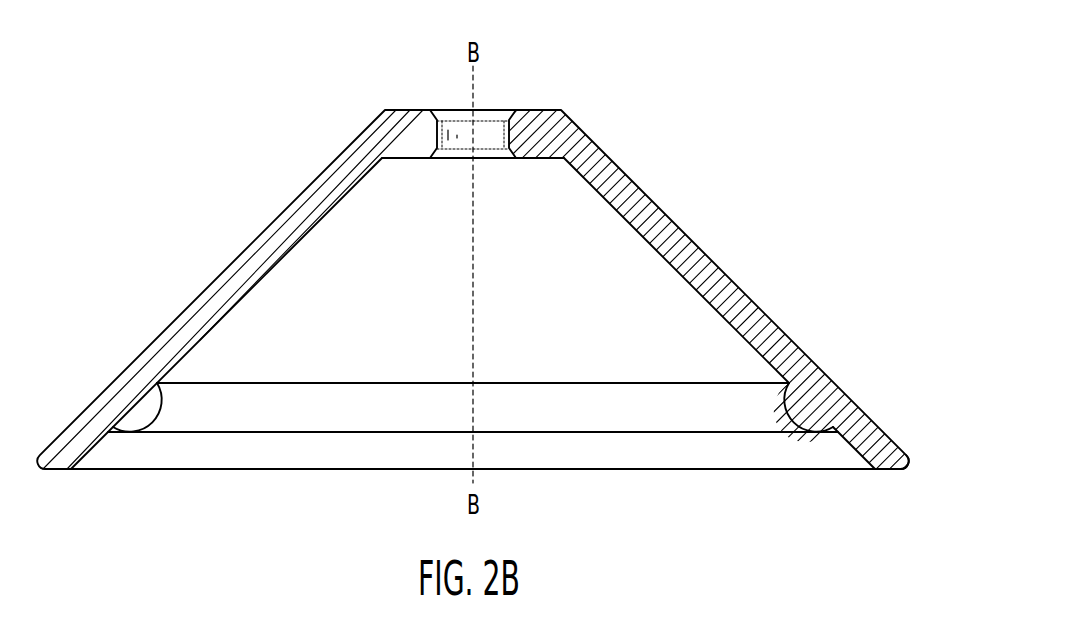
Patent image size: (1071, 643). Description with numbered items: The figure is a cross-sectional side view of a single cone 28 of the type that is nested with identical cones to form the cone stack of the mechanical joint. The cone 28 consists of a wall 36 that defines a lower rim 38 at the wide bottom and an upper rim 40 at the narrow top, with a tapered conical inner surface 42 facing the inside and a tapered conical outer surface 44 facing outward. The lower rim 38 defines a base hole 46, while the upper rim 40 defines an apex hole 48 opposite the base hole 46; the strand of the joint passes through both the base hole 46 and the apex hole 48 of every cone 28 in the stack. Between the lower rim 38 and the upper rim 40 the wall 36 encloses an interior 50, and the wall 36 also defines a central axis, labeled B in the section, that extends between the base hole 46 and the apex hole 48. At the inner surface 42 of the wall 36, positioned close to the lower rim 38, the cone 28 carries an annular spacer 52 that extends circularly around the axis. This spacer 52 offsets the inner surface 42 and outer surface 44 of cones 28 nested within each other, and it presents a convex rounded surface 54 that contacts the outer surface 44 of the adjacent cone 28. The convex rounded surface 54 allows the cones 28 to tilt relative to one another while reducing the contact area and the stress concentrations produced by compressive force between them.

The cone 28 is at (175, 118).
The wall 36 is at (612, 175).
The lower rim 38 is at (890, 471).
The upper rim 40 is at (543, 108).
The inner surface 42 is at (857, 449).
The outer surface 44 is at (842, 385).
The base hole 46 is at (405, 460).
The apex hole 48 is at (445, 97).
The interior 50 is at (403, 248).
The spacer 52 is at (136, 424).
The convex rounded surface 54 is at (160, 407).